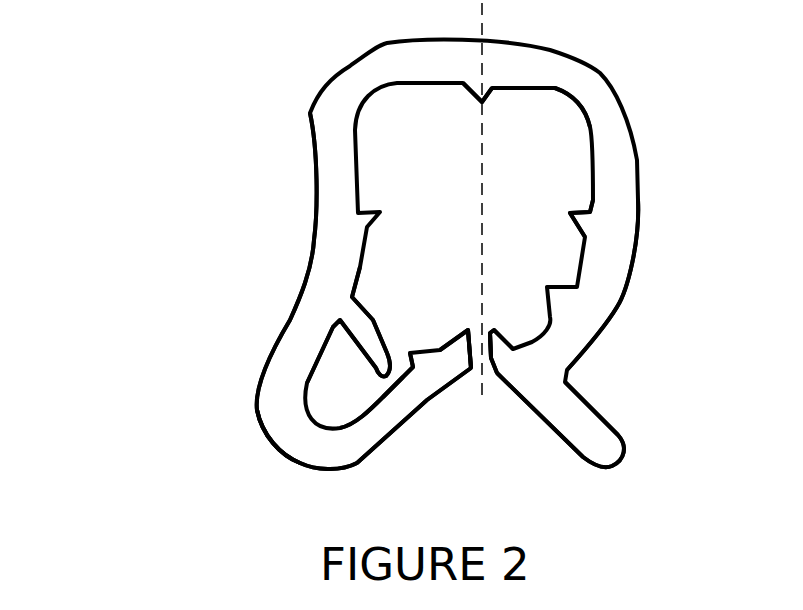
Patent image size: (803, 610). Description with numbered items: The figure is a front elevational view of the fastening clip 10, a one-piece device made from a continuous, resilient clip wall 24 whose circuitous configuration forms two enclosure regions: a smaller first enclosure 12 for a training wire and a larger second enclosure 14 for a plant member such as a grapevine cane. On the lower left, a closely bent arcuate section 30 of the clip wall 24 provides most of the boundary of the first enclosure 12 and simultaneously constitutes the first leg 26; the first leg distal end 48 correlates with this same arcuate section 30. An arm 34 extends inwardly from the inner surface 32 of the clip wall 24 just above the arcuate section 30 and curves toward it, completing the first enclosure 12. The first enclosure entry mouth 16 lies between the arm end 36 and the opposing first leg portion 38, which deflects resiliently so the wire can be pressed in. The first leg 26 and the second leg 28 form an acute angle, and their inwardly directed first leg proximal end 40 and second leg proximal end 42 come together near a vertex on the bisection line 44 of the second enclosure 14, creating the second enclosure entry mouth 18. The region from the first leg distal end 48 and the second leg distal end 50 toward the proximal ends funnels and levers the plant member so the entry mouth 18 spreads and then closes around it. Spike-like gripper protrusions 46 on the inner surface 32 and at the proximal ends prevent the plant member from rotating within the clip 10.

The fastening clip 10 is at (237, 93).
The first enclosure 12 is at (348, 342).
The second enclosure 14 is at (500, 120).
The first enclosure entry mouth 16 is at (398, 360).
The second enclosure entry mouth 18 is at (473, 366).
The clip wall 24 is at (340, 217).
The first leg 26 is at (363, 440).
The second leg 28 is at (563, 408).
The closely bent arcuate section 30 is at (285, 403).
The inner surface 32 is at (578, 122).
The arm 34 is at (362, 320).
The arm end 36 is at (383, 370).
The opposing first leg portion 38 is at (413, 397).
The first leg proximal end 40 is at (453, 360).
The second leg proximal end 42 is at (500, 360).
The bisection line 44 is at (480, 213).
The gripper protrusions 46 is at (570, 210).
The first leg distal end 48 is at (297, 440).
The second leg distal end 50 is at (590, 442).